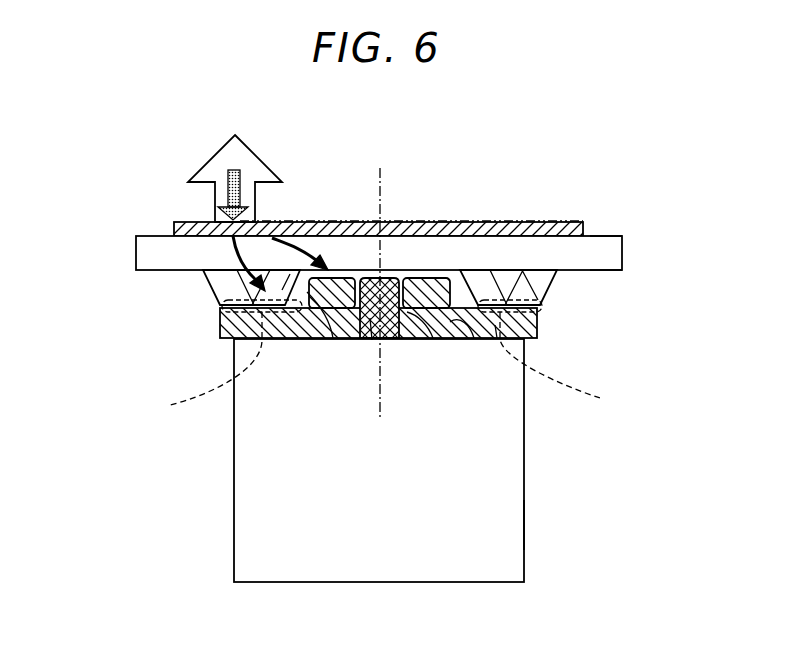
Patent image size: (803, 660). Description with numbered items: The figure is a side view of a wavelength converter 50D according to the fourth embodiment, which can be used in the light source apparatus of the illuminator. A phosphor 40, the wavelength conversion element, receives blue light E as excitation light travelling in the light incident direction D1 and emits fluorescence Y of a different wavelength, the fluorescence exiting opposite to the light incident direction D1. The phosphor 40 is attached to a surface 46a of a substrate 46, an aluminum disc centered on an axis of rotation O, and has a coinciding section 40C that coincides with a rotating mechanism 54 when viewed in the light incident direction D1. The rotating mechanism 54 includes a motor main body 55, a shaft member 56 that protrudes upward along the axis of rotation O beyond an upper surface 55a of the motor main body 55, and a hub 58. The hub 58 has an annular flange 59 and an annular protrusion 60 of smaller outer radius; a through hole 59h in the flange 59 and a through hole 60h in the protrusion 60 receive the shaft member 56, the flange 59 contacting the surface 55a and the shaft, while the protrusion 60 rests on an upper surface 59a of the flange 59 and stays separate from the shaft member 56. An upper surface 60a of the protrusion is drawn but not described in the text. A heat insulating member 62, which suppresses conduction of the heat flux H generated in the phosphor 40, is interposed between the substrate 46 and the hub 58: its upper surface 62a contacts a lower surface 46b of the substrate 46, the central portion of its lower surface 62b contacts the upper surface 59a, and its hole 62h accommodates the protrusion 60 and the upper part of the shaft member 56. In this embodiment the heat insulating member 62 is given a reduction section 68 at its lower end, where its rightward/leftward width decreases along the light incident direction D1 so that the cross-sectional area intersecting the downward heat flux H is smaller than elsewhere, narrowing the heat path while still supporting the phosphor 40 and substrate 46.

The wavelength converter 50D is at (633, 160).
The phosphor 40 is at (571, 216).
The coinciding section 40C is at (507, 222).
The substrate 46 is at (623, 252).
The surface of the substrate 46a is at (608, 236).
The lower surface of the substrate 46b is at (607, 270).
The hub 58 is at (537, 325).
The flange 59 is at (232, 322).
The upper surface of the flange 59a is at (233, 301).
The through hole 59h is at (372, 340).
The protrusion 60 is at (414, 278).
The top surface of protrusion 60a is at (430, 278).
The through hole 60h is at (371, 283).
The heat insulating member 62 is at (548, 290).
The upper surface of the heat insulating member 62a is at (533, 300).
The lower surface of the heat insulating member 62b is at (497, 338).
The hole 62h is at (333, 338).
The reduction section 68 is at (384, 365).
The motor main body 55 is at (524, 475).
The upper surface of the motor main body 55a is at (474, 338).
The rotating mechanism 54 is at (526, 525).
The shaft member 56 is at (433, 338).
The axis of rotation O is at (380, 280).
The heat flux H is at (297, 238).
The fluorescence Y is at (218, 153).
The blue light E is at (226, 198).
The light incident direction D1 is at (37, 100).